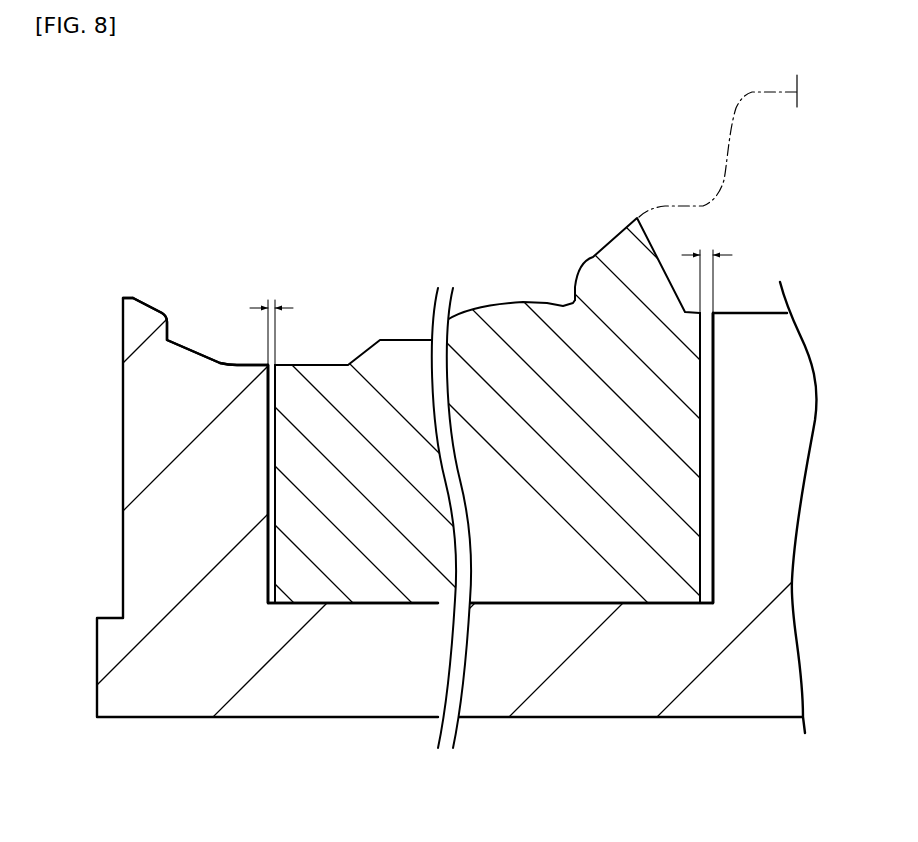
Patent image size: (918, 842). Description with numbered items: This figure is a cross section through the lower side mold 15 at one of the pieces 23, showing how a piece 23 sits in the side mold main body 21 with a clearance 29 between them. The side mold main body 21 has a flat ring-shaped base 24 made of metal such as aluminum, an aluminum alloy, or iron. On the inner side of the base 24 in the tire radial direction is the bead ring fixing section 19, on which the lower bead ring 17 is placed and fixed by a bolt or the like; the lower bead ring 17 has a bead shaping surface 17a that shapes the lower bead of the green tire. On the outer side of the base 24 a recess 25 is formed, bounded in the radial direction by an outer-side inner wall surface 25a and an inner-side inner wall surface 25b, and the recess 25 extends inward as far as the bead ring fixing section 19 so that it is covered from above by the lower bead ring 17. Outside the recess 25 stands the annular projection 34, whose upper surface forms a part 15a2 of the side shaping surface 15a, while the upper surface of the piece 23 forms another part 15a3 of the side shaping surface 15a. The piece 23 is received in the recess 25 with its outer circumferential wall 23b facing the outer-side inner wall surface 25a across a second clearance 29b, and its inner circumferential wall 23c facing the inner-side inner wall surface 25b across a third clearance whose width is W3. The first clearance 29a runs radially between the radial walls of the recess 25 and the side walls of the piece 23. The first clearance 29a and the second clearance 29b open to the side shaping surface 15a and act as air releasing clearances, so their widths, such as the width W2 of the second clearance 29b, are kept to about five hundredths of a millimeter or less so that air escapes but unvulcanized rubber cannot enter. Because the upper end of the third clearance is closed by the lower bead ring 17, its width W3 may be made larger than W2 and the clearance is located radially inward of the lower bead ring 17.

The lower side mold 15 is at (424, 80).
The side shaping surface 15a is at (355, 279).
The part of side shaping surface on annular projection 15a2 is at (202, 350).
The part of side shaping surface on piece 15a3 is at (518, 300).
The lower bead ring 17 is at (718, 132).
The bead shaping surface 17a is at (722, 183).
The bead ring fixing section 19 is at (747, 312).
The side mold main body 21 is at (123, 297).
The piece 23 is at (400, 347).
The outer circumferential wall 23b is at (272, 455).
The inner circumferential wall 23c is at (702, 512).
The base 24 is at (397, 645).
The recess 25 is at (512, 603).
The outer-side inner wall surface 25a is at (268, 542).
The inner-side inner wall surface 25b is at (713, 560).
The clearance 29 is at (556, 278).
The first clearance 29a is at (265, 365).
The second clearance 29b is at (706, 312).
The annular projection 34 is at (180, 422).
The width of second clearance W2 is at (271, 300).
The width of third clearance W3 is at (705, 252).